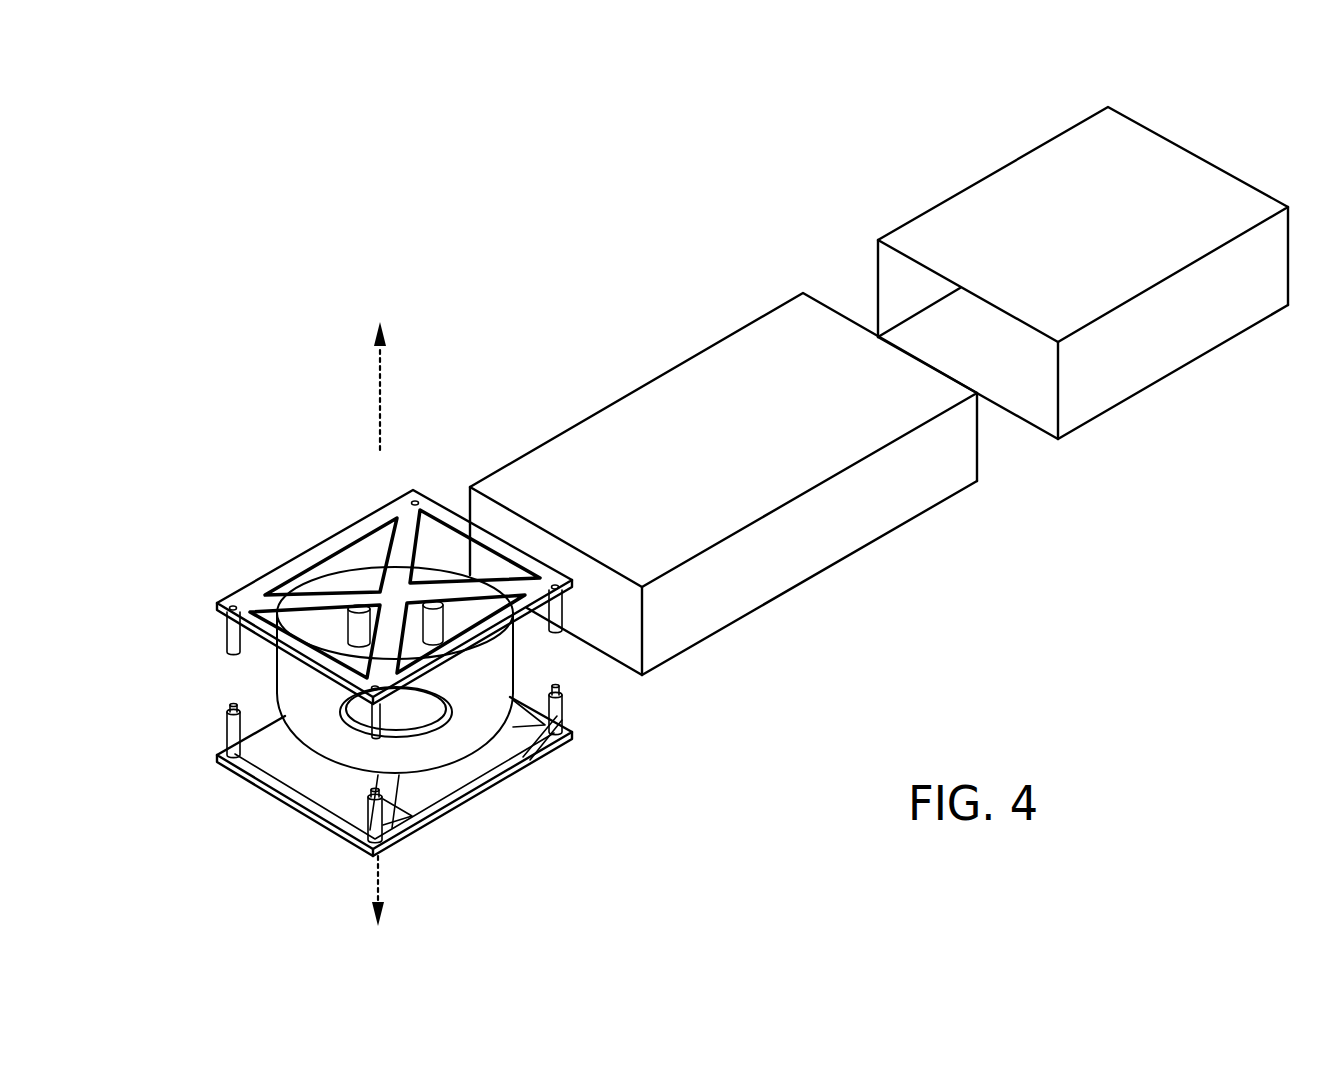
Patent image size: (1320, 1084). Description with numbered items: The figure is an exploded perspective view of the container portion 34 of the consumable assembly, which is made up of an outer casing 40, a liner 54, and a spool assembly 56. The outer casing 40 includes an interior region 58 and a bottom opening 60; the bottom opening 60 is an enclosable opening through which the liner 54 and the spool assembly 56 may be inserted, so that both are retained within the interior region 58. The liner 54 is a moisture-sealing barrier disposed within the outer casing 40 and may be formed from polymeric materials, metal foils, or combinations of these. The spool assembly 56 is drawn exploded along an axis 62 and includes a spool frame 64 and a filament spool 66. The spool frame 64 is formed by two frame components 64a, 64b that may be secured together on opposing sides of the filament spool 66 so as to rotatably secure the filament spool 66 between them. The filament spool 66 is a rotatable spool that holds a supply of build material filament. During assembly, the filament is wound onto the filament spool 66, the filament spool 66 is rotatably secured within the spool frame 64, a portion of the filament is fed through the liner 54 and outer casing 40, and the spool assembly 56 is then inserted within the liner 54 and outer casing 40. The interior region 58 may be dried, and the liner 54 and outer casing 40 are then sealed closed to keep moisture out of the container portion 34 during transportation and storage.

The container portion 34 is at (620, 183).
The outer casing 40 is at (1045, 165).
The liner 54 is at (830, 523).
The spool assembly 56 is at (633, 792).
The interior region 58 is at (889, 275).
The bottom opening 60 is at (1025, 444).
The axis 62 is at (380, 377).
The spool frame 64 is at (213, 582).
The frame component 64a is at (375, 522).
The frame component 64b is at (517, 773).
The filament spool 66 is at (328, 733).